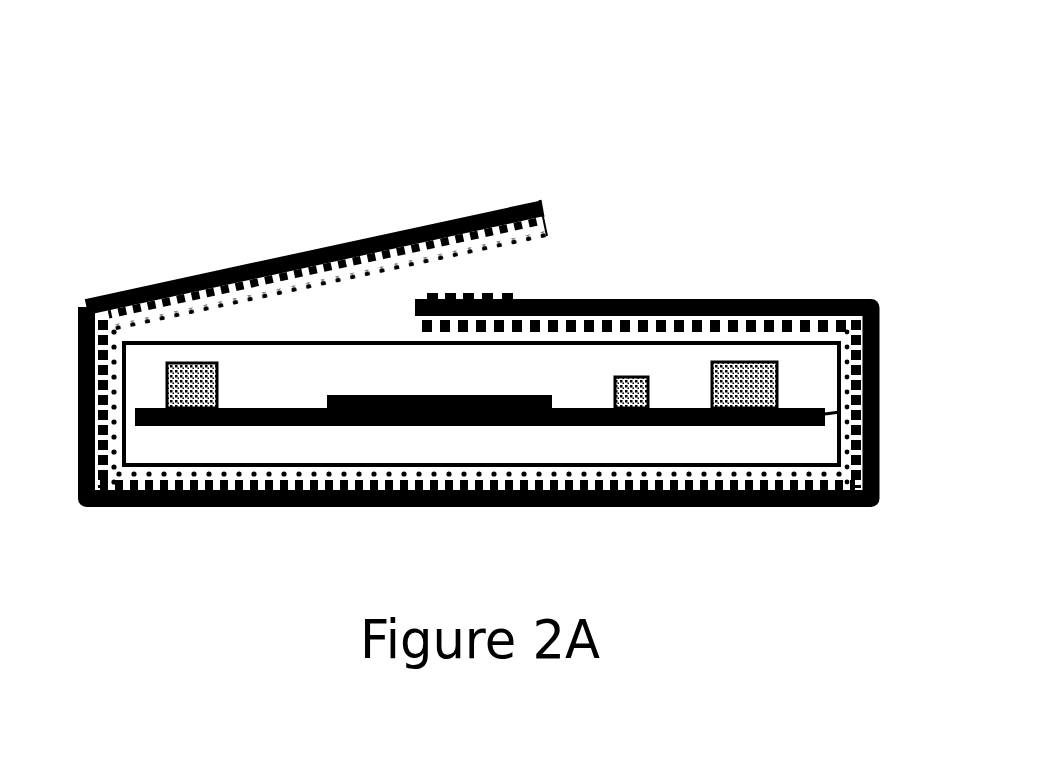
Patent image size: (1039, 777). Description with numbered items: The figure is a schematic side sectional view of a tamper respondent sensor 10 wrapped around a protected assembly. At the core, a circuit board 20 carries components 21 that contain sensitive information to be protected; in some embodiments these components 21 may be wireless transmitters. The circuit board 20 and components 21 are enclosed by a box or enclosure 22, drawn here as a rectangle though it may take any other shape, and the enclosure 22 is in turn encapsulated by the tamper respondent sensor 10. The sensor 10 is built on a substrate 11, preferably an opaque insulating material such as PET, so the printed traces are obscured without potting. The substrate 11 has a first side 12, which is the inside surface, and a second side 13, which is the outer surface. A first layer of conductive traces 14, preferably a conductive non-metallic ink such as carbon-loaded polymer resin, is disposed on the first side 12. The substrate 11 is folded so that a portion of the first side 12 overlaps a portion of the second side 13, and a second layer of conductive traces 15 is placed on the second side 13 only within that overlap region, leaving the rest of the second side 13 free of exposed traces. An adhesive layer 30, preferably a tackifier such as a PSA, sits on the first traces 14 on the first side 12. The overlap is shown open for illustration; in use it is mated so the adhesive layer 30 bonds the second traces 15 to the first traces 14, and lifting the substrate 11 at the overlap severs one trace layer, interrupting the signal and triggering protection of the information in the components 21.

The tamper respondent sensor 10 is at (273, 532).
The substrate 11 is at (360, 240).
The first side 12 is at (313, 283).
The second side 13 is at (290, 250).
The first layer of conductive traces 14 is at (545, 222).
The second layer of conductive traces 15 is at (527, 292).
The circuit board 20 is at (883, 393).
The components 21 is at (513, 393).
The enclosure 22 is at (250, 340).
The adhesive layer 30 is at (547, 235).